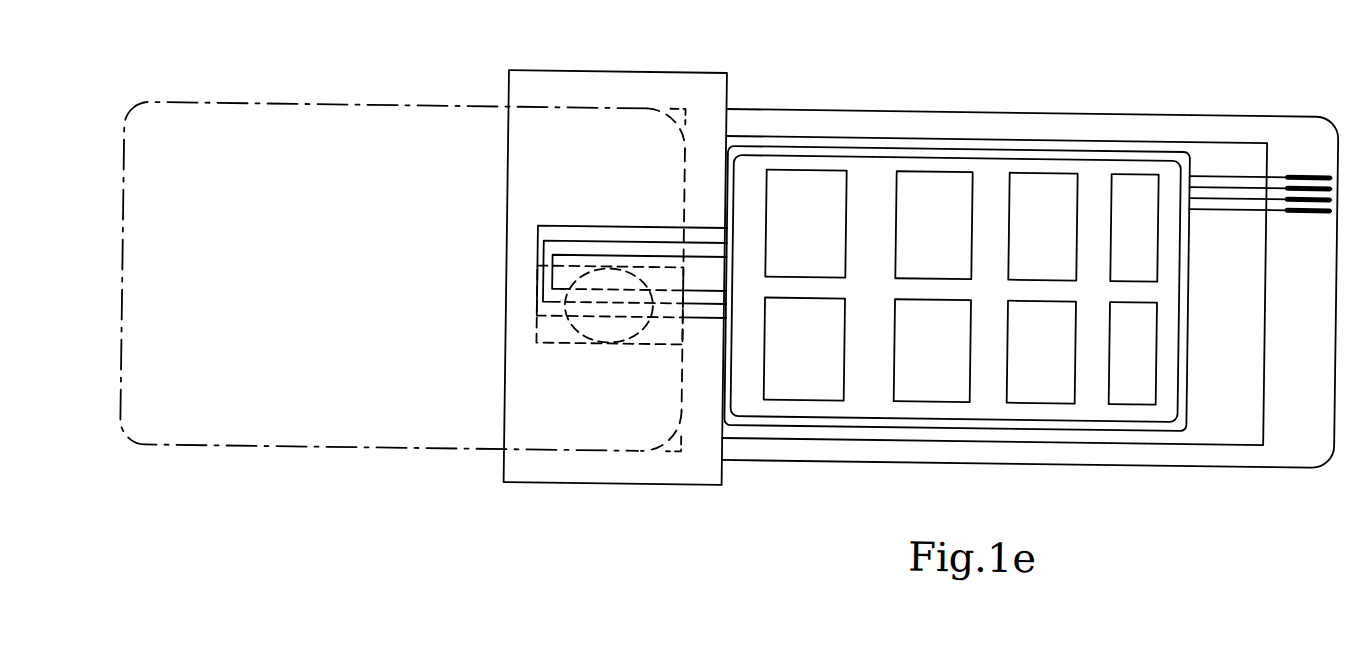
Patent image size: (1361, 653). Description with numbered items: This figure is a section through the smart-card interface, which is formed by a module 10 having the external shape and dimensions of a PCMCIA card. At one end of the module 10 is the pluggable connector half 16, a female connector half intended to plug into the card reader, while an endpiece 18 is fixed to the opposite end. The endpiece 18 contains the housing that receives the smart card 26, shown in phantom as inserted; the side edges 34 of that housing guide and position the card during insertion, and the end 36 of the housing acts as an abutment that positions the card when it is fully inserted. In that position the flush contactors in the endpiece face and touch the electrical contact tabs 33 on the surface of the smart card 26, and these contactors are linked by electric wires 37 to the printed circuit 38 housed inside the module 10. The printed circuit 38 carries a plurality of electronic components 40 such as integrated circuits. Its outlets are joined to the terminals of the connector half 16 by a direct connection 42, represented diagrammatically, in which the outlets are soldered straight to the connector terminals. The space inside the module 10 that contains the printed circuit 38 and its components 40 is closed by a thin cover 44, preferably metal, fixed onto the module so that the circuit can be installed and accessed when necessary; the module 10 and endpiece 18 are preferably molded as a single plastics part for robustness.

The module 10 is at (1080, 105).
The connector half 16 is at (1283, 140).
The endpiece 18 is at (633, 71).
The smart card 26 is at (207, 281).
The electrical contact tabs 33 is at (610, 332).
The side edges 34 is at (566, 108).
The end 36 is at (681, 171).
The electric wires 37 is at (630, 259).
The printed circuit 38 is at (869, 190).
The electronic components 40 is at (787, 207).
The direct connection 42 is at (1251, 203).
The cover 44 is at (983, 153).